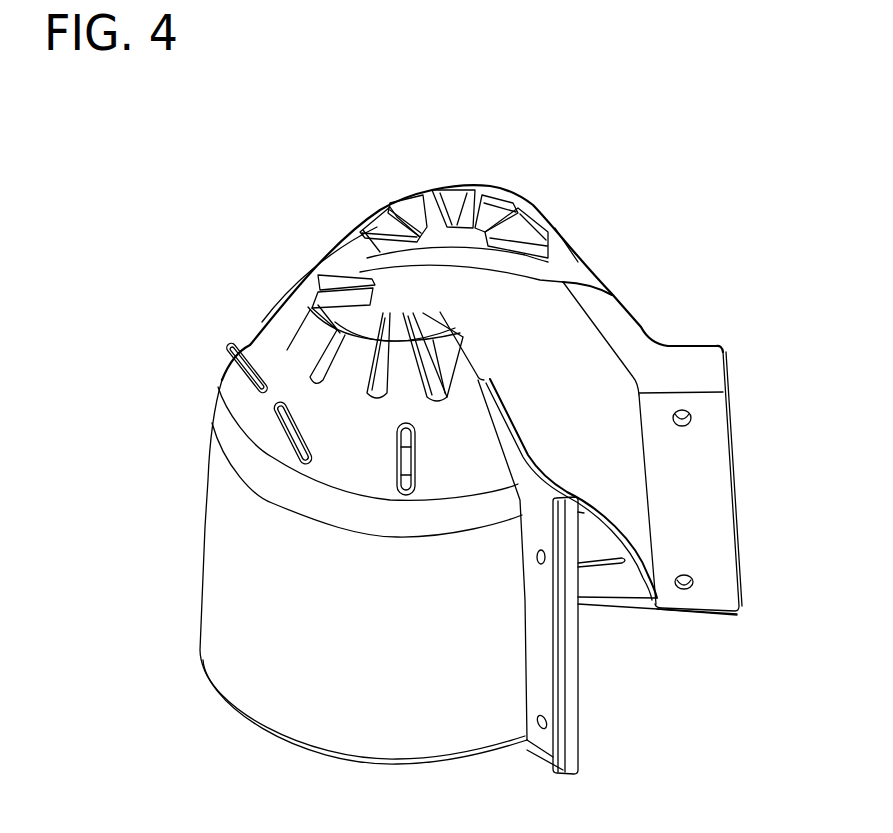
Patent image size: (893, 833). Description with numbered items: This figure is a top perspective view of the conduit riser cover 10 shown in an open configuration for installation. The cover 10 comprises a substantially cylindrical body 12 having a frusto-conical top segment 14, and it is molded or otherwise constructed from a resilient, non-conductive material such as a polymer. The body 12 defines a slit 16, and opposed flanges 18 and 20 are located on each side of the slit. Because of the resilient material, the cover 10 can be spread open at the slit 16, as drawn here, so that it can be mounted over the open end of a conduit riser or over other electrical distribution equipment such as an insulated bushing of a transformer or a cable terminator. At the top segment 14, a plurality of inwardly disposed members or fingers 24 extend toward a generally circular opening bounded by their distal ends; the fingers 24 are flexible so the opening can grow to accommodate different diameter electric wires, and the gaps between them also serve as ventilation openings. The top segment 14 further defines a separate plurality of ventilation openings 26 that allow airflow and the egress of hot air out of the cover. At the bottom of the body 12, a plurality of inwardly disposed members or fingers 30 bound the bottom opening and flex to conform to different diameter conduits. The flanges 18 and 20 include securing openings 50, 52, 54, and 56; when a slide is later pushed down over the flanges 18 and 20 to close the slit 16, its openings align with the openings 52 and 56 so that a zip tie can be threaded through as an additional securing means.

The conduit riser cover 10 is at (553, 191).
The cylindrical body 12 is at (226, 643).
The frusto-conical top segment 14 is at (263, 323).
The slit 16 is at (650, 372).
The flange 18 is at (715, 503).
The flange 20 is at (575, 708).
The inwardly disposed members or fingers 24 is at (413, 205).
The ventilation openings 26 is at (407, 460).
The inwardly disposed members or fingers 30 is at (613, 587).
The securing opening 50 is at (690, 414).
The securing opening 52 is at (686, 590).
The securing opening 54 is at (538, 560).
The securing opening 56 is at (541, 730).